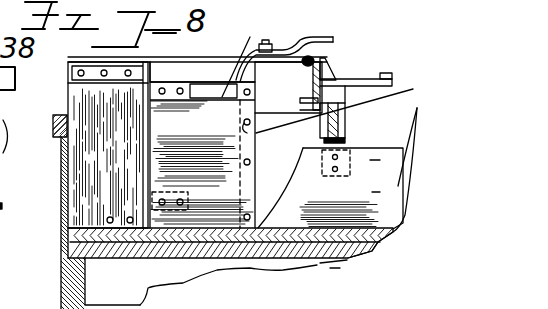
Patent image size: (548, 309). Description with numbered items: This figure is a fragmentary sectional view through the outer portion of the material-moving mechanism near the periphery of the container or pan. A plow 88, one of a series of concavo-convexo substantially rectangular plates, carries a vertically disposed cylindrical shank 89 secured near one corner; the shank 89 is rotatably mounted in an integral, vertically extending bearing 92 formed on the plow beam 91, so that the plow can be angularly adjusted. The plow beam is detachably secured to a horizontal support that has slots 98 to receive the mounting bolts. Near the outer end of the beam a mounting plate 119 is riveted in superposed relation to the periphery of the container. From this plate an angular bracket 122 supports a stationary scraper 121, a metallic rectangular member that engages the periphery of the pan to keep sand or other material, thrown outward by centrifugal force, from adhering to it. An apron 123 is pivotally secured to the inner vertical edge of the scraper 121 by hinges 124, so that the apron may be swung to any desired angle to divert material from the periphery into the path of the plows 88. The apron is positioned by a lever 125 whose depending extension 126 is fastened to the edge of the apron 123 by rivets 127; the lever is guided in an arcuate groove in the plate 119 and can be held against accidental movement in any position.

The plow 88 is at (376, 168).
The cylindrical shank 89 is at (350, 143).
The plow beam 91 is at (350, 133).
The bearing 92 is at (352, 127).
The slot 98 is at (334, 78).
The mounting plate 119 is at (222, 58).
The scraper 121 is at (78, 144).
The angular bracket 122 is at (93, 72).
The apron 123 is at (251, 56).
The hinge 124 is at (129, 217).
The lever 125 is at (410, 17).
The depending extension 126 is at (250, 78).
The rivet 127 is at (333, 97).